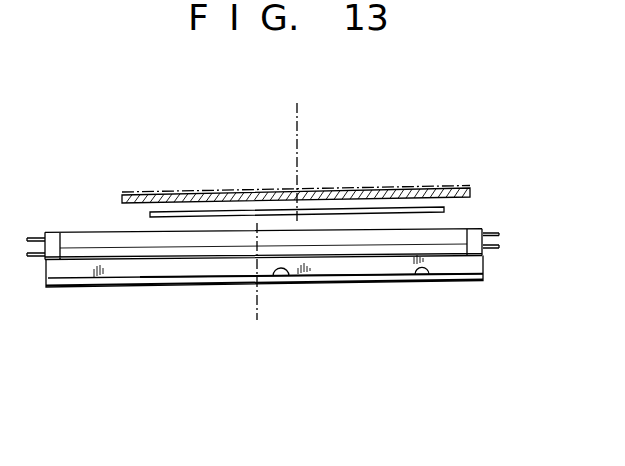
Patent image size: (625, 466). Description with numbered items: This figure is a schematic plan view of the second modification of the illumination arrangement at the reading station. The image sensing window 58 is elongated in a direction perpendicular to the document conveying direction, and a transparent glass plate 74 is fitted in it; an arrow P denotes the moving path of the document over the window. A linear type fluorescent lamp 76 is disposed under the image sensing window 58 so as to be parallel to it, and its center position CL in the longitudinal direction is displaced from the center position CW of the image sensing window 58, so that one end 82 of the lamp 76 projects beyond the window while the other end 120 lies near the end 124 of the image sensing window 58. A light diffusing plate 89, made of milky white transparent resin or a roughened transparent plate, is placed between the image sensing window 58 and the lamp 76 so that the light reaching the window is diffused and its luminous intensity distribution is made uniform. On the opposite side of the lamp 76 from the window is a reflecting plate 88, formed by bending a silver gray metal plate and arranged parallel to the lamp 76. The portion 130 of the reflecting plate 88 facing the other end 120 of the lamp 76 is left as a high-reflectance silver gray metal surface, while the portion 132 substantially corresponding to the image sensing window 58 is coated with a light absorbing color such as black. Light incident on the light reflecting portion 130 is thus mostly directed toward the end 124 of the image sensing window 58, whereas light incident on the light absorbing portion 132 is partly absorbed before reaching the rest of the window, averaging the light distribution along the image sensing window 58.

The moving path of the document P is at (450, 187).
The transparent glass plate 74 is at (386, 192).
The light diffusing plate 89 is at (266, 193).
The end of image sensing window 124 is at (438, 195).
The image sensing window 58 is at (347, 196).
The center position of the image sensing window CW is at (298, 112).
The end of lamp 82 is at (76, 247).
The linear type fluorescent lamp 76 is at (440, 238).
The other end of lamp 120 is at (453, 238).
The reflecting plate 88 is at (473, 280).
The light absorbing portion 132 is at (287, 277).
The light reflecting portion 130 is at (430, 277).
The center position of the lamp CL is at (257, 309).